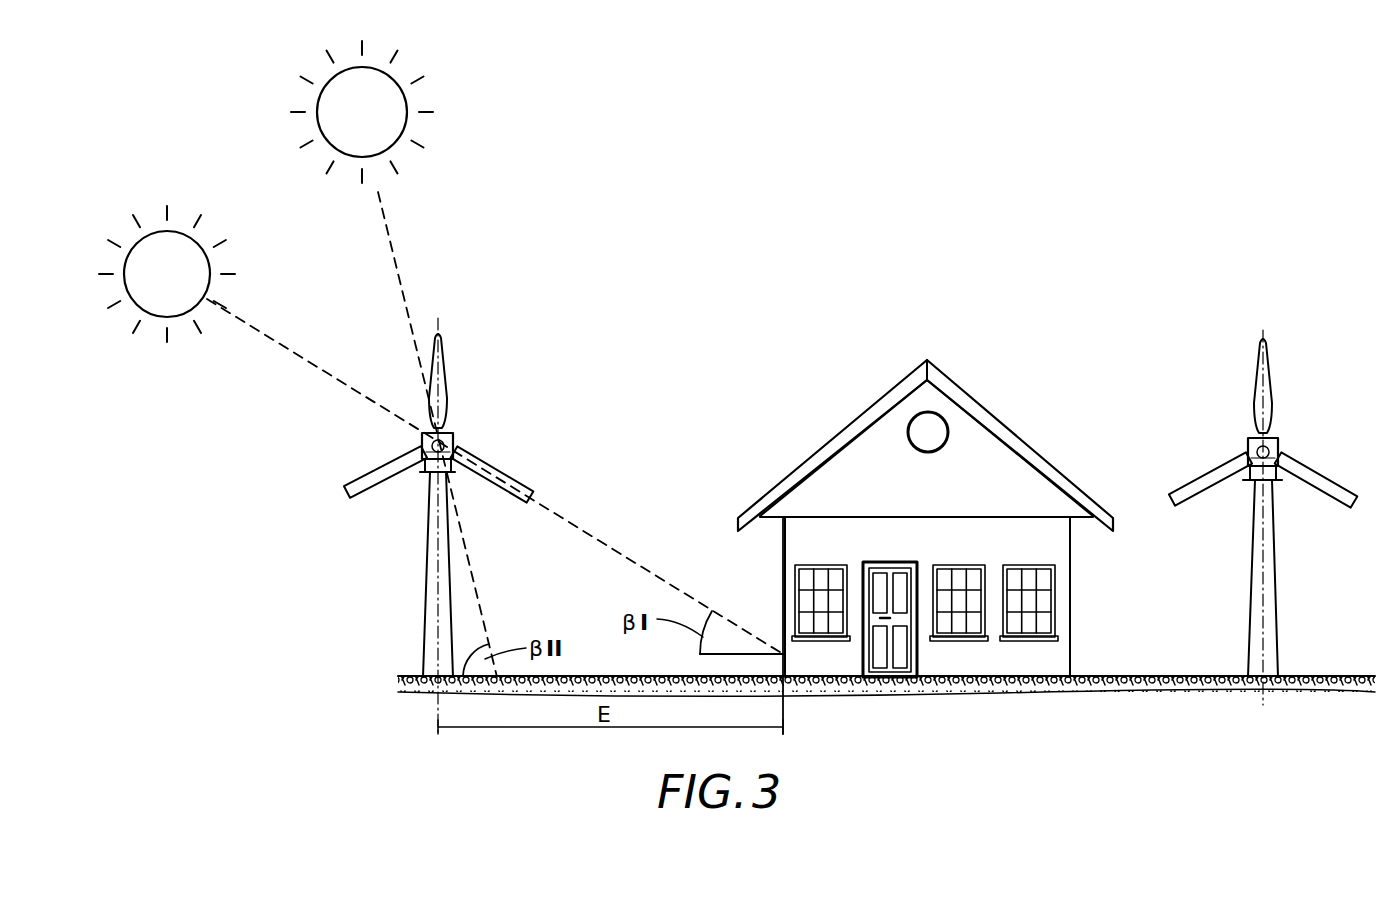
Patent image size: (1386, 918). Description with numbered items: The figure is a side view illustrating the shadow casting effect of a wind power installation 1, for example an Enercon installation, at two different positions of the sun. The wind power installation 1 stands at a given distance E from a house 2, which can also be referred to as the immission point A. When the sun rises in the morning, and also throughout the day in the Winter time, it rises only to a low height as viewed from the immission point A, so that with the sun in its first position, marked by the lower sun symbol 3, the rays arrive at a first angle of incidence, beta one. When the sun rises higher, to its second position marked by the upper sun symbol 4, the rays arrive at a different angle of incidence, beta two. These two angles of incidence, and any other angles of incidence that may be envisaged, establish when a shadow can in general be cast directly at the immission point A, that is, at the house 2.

The wind power installation 1 is at (448, 382).
The house 2 is at (1000, 420).
The sun at position I 3 is at (162, 231).
The sun at position II 4 is at (317, 120).